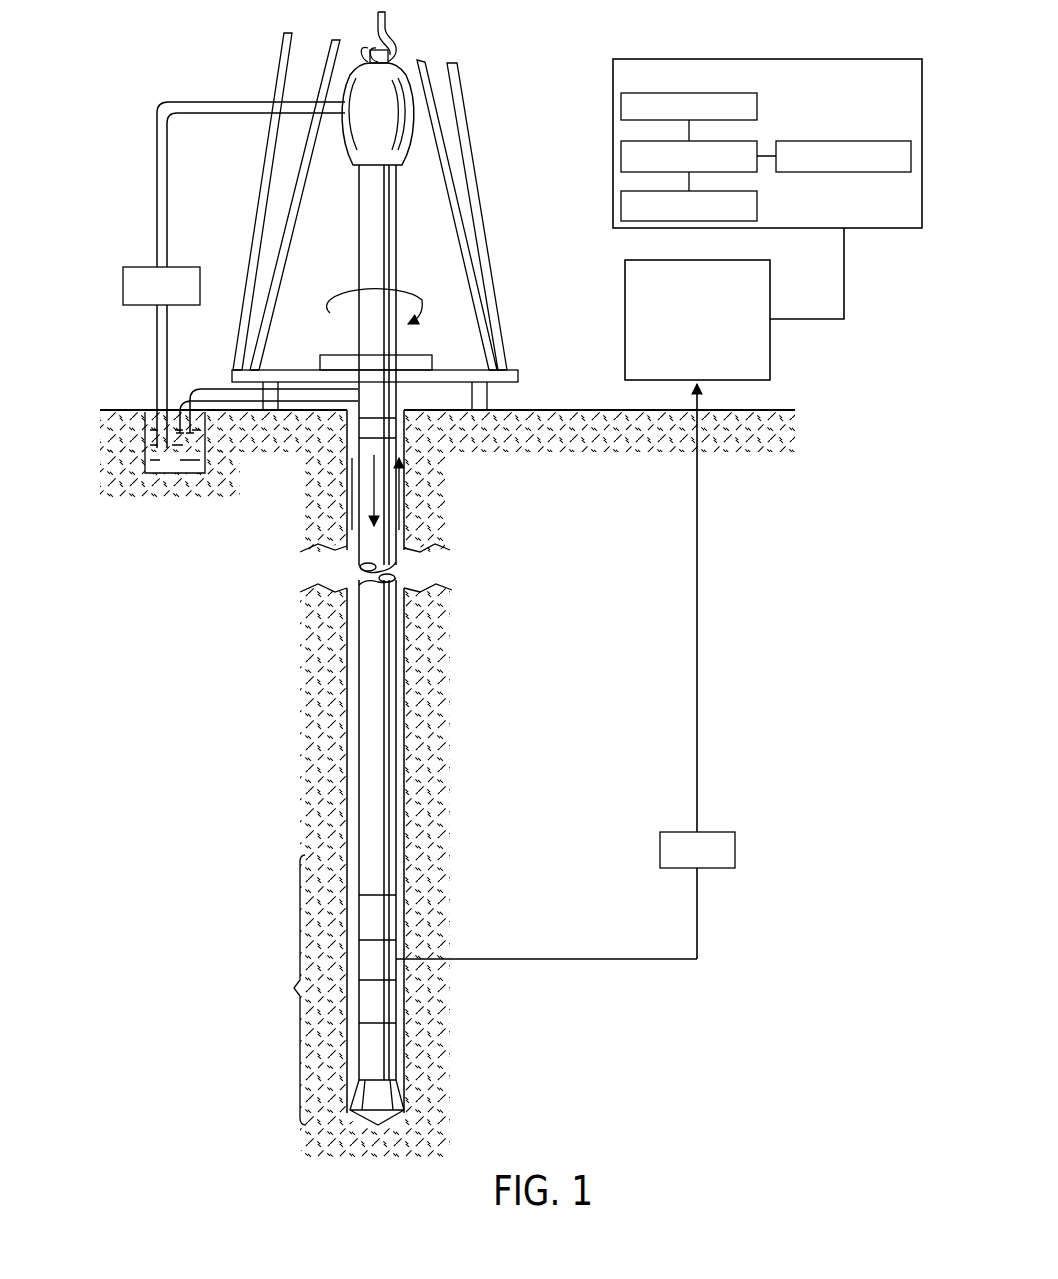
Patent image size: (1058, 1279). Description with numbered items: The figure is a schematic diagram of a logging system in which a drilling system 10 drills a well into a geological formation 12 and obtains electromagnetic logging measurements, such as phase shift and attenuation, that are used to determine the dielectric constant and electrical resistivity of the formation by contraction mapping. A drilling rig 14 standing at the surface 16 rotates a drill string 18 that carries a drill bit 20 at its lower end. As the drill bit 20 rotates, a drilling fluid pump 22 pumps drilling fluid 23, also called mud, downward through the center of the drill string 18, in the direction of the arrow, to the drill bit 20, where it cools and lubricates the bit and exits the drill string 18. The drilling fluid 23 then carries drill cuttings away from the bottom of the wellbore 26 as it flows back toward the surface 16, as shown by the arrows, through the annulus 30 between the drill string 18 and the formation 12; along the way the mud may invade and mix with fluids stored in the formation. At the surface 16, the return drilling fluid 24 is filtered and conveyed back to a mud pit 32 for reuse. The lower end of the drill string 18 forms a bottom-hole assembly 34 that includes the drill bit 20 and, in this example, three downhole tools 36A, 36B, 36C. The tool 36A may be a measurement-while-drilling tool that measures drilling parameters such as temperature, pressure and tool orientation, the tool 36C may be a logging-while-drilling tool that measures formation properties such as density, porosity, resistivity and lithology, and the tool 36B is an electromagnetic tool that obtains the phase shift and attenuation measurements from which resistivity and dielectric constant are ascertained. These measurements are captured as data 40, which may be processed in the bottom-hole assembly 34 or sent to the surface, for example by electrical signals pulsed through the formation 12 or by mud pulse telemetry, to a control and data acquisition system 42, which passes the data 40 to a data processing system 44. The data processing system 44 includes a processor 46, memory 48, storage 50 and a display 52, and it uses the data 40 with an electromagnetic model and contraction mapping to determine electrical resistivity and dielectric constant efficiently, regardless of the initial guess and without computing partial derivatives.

The drilling system 10 is at (538, 54).
The geological formation 12 is at (546, 755).
The drilling rig 14 is at (493, 126).
The surface 16 is at (557, 406).
The drill string 18 is at (372, 402).
The drill bit 20 is at (380, 1101).
The drilling fluid pump 22 is at (123, 281).
The drilling fluid 23 is at (372, 507).
The return drilling fluid 24 is at (348, 500).
The wellbore 26 is at (347, 715).
The annulus 30 is at (400, 410).
The mud pit 32 is at (176, 473).
The bottom-hole assembly 34 is at (284, 990).
The downhole tool 36A is at (383, 918).
The downhole tool 36B is at (398, 948).
The downhole tool 36C is at (383, 997).
The data 40 is at (735, 848).
The control and data acquisition system 42 is at (625, 292).
The data processing system 44 is at (846, 59).
The processor 46 is at (757, 170).
The memory 48 is at (757, 108).
The storage 50 is at (757, 205).
The display 52 is at (840, 141).